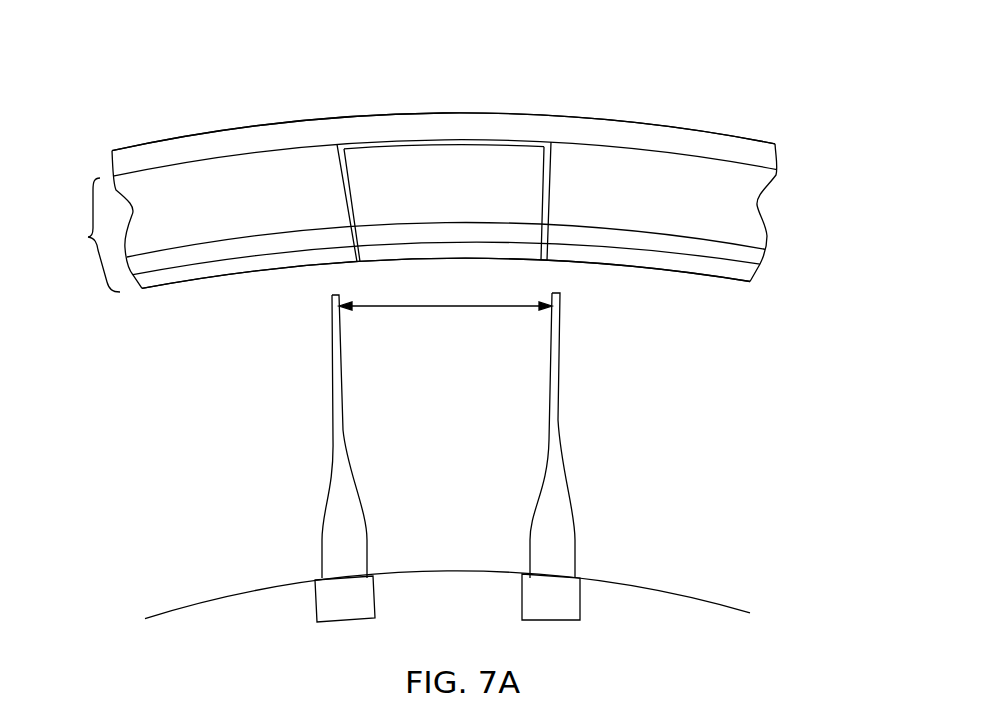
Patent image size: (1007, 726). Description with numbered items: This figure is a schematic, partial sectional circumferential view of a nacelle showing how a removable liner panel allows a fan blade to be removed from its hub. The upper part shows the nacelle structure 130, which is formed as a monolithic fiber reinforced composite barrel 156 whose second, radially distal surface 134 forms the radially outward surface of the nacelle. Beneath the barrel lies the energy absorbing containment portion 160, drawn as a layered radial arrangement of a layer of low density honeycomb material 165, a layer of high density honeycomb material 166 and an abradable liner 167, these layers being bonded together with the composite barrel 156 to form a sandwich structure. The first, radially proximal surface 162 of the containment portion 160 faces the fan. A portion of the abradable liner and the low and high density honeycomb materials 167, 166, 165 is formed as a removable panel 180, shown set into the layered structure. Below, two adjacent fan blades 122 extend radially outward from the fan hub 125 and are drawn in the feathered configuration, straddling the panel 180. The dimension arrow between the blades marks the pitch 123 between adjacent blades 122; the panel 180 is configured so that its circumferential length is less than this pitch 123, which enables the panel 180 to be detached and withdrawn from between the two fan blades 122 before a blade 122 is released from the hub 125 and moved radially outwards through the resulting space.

The fan blades 122 is at (548, 512).
The pitch 123 is at (450, 307).
The fan hub 125 is at (657, 603).
The nacelle structure 130 is at (263, 124).
The second radially distal surface 134 is at (320, 118).
The fiber reinforced composite barrel 156 is at (170, 152).
The containment portion 160 is at (90, 237).
The first radially proximal surface of the containment portion 162 is at (278, 268).
The layer of low density honeycomb material 165 is at (742, 190).
The layer of high density honeycomb material 166 is at (755, 257).
The abradable liner 167 is at (750, 273).
The removable panel 180 is at (497, 160).